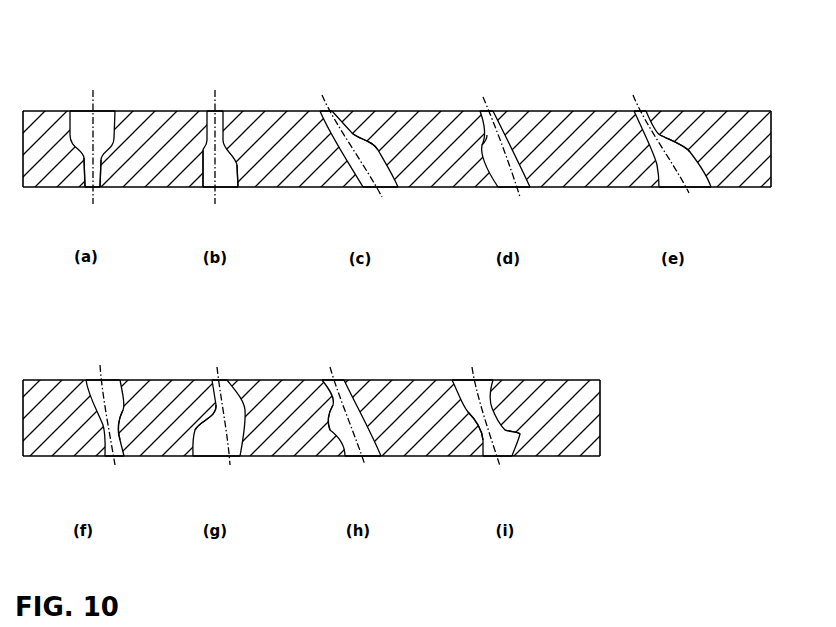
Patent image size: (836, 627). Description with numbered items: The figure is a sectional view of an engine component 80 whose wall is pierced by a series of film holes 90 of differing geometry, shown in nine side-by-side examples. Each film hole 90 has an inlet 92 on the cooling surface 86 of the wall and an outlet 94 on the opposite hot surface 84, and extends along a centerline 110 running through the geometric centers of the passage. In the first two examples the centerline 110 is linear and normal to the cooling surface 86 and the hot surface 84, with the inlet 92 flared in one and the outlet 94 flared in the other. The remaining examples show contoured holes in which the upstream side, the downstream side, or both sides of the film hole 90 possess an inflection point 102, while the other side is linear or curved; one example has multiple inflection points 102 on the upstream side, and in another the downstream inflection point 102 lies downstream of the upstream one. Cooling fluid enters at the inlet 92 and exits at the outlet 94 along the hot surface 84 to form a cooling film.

The engine component 80 is at (735, 108).
The cooling surface 86 is at (764, 111).
The hot surface 84 is at (748, 188).
The film hole 90 is at (61, 121).
The inlet 92 is at (106, 111).
The outlet 94 is at (97, 189).
The inflection point 102 is at (84, 162).
The centerline 110 is at (92, 92).